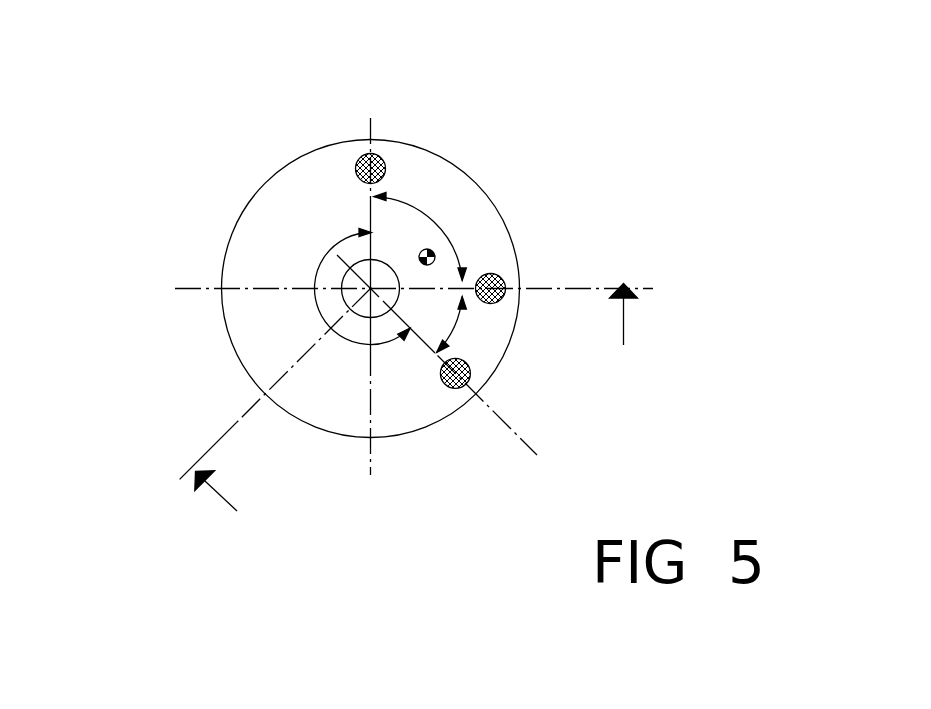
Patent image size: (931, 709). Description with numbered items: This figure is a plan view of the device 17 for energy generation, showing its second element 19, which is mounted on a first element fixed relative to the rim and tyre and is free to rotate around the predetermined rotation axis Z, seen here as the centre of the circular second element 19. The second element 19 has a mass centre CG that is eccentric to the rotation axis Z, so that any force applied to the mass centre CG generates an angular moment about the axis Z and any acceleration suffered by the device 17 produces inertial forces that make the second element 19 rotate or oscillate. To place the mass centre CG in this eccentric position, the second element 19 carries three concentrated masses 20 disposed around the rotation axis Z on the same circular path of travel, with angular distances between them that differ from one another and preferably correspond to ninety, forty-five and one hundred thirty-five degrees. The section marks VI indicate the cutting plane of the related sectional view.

The device for energy generation 17 is at (212, 188).
The second element 19 is at (415, 143).
The concentrated mass 20 is at (357, 162).
The mass centre CG is at (427, 257).
The predetermined rotation axis Z is at (370, 290).
The section line VI- VI is at (422, 410).